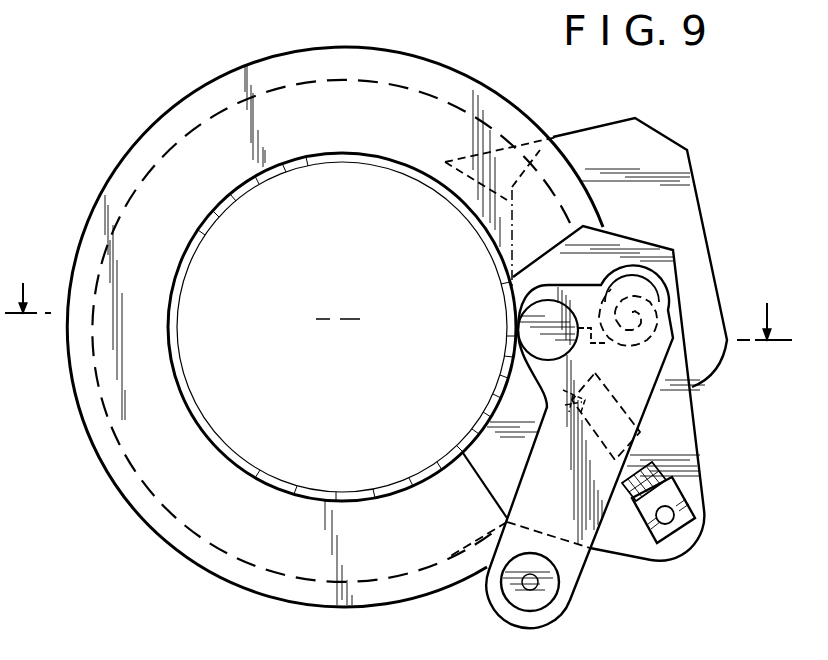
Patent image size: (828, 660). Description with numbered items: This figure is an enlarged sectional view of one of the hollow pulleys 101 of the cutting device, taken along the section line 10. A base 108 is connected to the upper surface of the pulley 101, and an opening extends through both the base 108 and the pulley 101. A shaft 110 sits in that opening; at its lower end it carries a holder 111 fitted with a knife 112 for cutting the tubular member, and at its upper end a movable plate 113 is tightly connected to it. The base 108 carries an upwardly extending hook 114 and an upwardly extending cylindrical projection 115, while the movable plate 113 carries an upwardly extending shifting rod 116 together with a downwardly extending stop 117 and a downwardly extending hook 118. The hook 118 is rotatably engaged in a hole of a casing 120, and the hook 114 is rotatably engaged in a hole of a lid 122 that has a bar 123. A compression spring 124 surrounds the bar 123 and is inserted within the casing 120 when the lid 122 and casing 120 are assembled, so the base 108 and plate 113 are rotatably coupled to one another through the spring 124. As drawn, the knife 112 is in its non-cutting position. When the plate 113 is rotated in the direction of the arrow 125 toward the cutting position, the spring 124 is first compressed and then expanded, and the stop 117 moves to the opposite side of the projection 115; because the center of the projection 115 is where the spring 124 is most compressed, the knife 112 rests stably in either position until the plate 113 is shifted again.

The section line 10- 10 is at (398, 293).
The pulley 101 is at (247, 542).
The base 108 is at (700, 480).
The shaft 110 is at (518, 332).
The holder 111 is at (697, 197).
The knife 112 is at (520, 157).
The movable plate 113 is at (490, 602).
The hook 114 is at (700, 534).
The cylindrical projection 115 is at (660, 284).
The shifting rod 116 is at (522, 608).
The stop 117 is at (653, 348).
The hook 118 is at (560, 400).
The casing 120 is at (643, 427).
The lid 122 is at (690, 502).
The bar 123 is at (625, 420).
The compression spring 124 is at (660, 453).
The arrow 125 is at (624, 578).